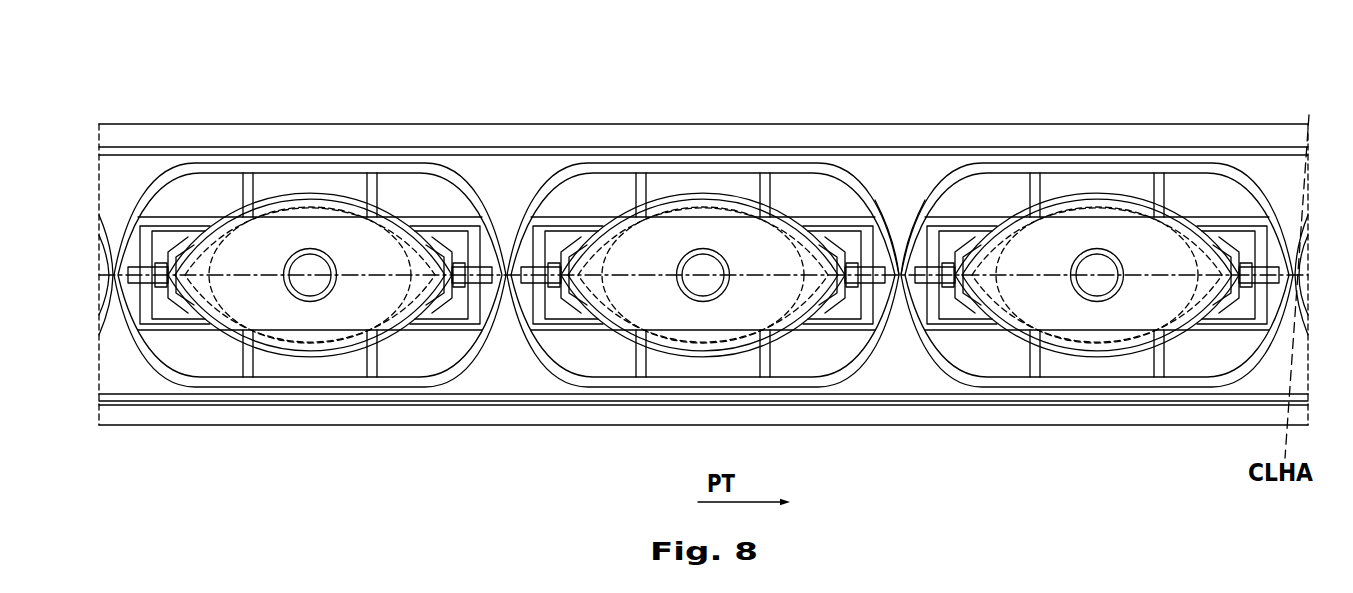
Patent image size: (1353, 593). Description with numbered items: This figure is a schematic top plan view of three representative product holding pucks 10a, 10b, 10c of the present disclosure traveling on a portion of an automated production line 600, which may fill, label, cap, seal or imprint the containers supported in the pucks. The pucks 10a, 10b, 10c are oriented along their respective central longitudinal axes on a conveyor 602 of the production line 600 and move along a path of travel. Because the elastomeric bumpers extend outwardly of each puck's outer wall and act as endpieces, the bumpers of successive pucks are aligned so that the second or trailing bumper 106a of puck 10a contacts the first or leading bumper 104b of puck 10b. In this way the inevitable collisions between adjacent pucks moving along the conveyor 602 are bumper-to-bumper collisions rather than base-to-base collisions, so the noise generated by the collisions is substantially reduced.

The puck 10a is at (1097, 277).
The puck 10b is at (703, 276).
The puck 10c is at (319, 265).
The first or leading bumper 104b is at (903, 240).
The second or trailing bumper 106a is at (890, 300).
The automated production line 600 is at (887, 112).
The conveyor 602 is at (922, 112).